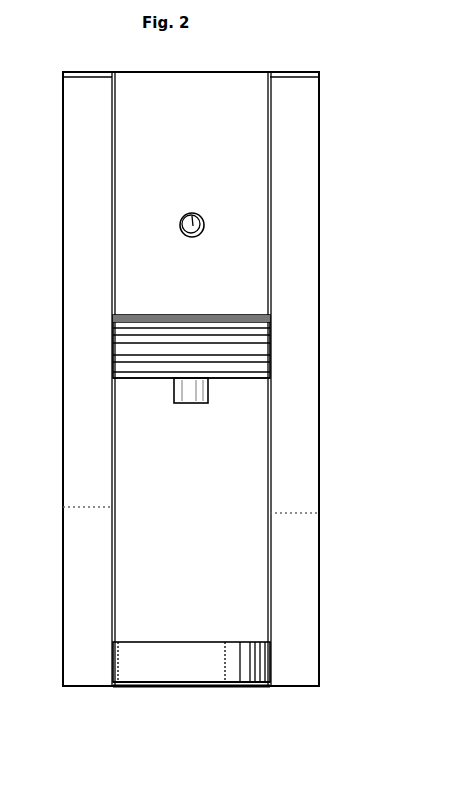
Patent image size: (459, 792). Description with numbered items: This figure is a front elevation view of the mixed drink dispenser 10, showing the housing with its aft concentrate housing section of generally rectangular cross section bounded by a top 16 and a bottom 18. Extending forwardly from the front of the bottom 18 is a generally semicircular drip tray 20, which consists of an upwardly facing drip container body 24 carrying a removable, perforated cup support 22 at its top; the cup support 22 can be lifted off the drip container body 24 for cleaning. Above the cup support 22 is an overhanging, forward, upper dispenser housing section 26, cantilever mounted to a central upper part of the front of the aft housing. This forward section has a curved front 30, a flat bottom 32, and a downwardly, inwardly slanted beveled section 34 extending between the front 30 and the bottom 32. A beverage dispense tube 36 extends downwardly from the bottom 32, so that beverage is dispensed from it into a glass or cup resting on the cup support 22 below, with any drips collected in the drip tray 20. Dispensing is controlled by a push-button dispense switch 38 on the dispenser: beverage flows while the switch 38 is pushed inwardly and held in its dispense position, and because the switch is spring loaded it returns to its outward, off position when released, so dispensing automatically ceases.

The drink dispenser 10 is at (252, 61).
The top 16 is at (302, 72).
The bottom 18 is at (272, 688).
The drip tray 20 is at (108, 660).
The cup support 22 is at (232, 642).
The drip container body 24 is at (215, 658).
The dispenser housing section 26 is at (108, 152).
The front 30 is at (272, 160).
The bottom 32 is at (230, 378).
The beveled section 34 is at (264, 340).
The beverage dispense tube 36 is at (172, 387).
The push-button dispense switch 38 is at (181, 214).